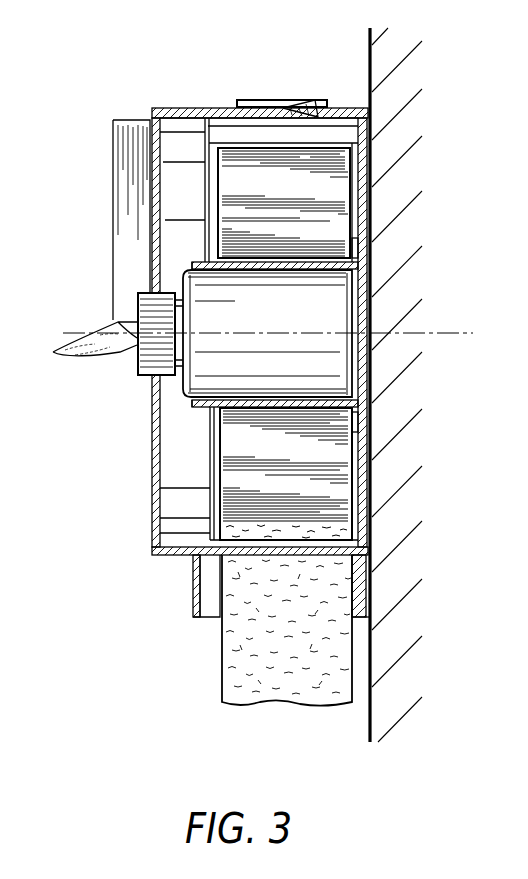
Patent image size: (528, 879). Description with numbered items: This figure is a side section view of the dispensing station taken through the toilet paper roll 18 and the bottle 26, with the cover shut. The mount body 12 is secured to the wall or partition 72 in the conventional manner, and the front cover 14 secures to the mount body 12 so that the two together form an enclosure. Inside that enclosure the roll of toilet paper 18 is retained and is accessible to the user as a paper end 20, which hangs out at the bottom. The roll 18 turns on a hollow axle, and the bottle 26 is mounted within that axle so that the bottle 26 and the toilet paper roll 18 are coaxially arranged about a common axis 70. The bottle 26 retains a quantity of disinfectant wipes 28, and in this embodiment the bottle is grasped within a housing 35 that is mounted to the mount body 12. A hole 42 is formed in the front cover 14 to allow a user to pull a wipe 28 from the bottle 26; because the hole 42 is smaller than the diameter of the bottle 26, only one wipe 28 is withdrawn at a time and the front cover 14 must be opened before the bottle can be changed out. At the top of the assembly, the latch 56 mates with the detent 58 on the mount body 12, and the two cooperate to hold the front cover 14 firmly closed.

The mount body 12 is at (366, 486).
The front cover 14 is at (157, 483).
The roll of toilet paper 18 is at (332, 197).
The paper end 20 is at (235, 683).
The bottle 26 is at (296, 319).
The disinfectant wipes 28 is at (90, 350).
The housing 35 is at (358, 268).
The hole 42 is at (150, 292).
The latch 56 is at (285, 100).
The detent 58 is at (327, 105).
The axis 70 is at (460, 333).
The wall or partition 72 is at (371, 726).